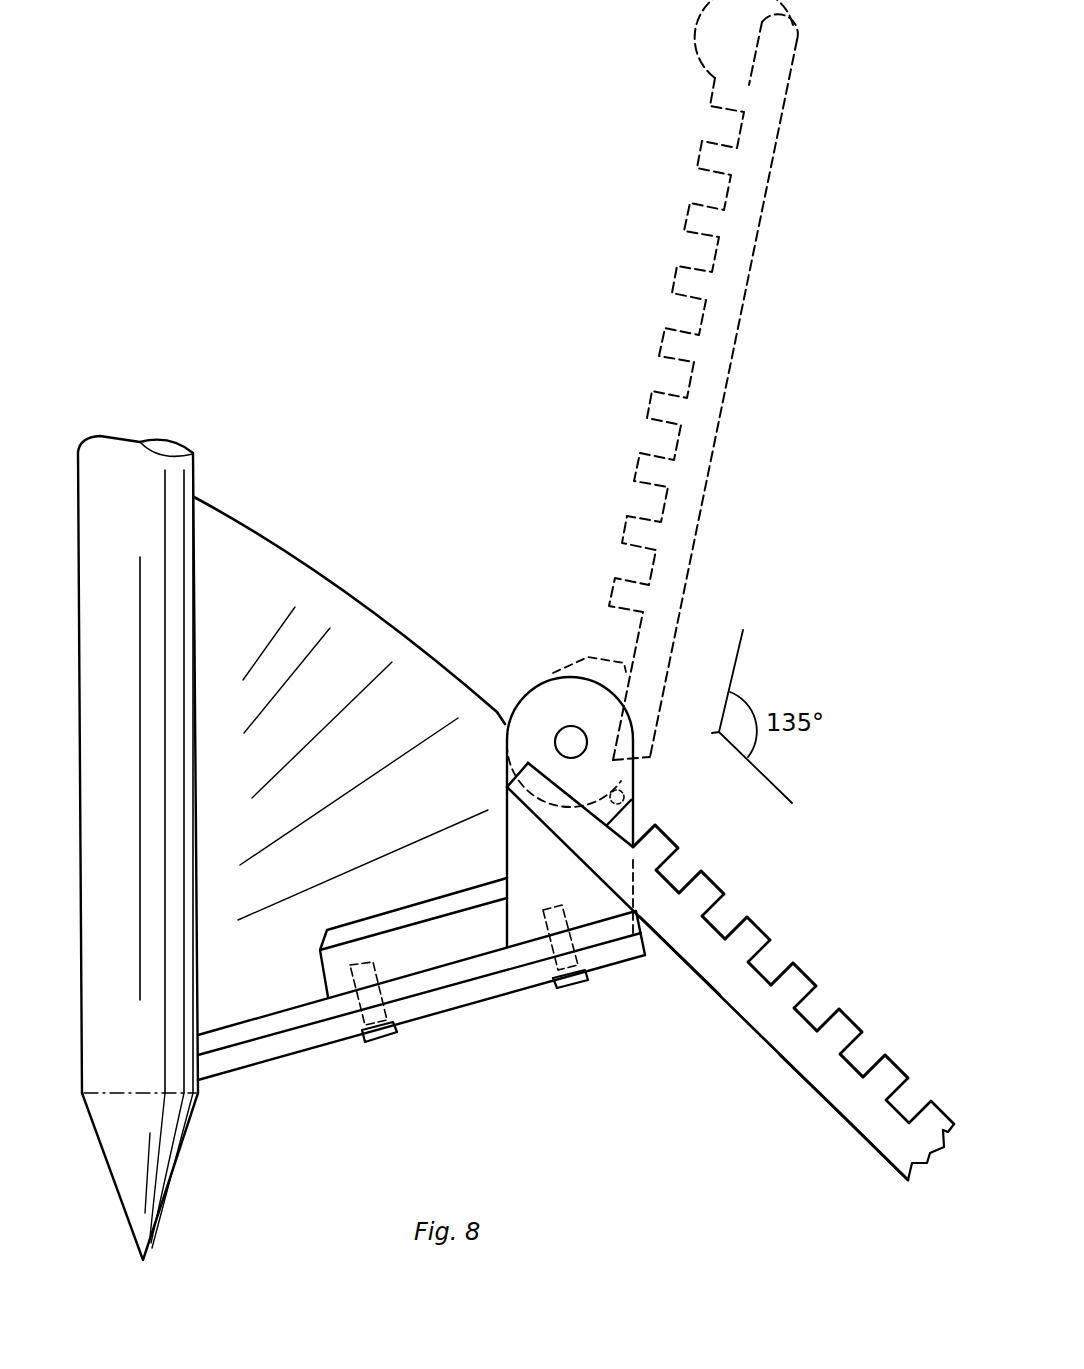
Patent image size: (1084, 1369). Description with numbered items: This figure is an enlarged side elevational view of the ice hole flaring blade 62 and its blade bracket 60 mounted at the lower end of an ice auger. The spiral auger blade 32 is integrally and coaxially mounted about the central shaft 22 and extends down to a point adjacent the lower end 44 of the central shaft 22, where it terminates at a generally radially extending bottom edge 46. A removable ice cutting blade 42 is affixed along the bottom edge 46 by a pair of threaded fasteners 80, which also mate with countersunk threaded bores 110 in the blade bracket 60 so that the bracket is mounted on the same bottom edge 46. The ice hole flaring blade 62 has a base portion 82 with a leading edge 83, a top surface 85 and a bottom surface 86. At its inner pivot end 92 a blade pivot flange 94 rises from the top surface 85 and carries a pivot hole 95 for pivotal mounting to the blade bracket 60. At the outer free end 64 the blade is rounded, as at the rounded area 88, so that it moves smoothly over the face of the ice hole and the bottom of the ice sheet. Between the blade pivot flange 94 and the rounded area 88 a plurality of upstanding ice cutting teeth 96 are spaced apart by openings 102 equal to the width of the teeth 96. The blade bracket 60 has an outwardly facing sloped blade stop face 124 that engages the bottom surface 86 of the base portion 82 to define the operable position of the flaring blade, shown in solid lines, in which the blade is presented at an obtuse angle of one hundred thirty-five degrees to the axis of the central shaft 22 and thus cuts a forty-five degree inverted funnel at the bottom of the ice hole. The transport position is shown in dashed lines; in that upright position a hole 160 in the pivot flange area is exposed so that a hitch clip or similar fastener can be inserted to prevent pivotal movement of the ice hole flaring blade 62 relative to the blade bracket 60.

The central shaft 22 is at (132, 468).
The spiral auger blade 32 is at (267, 603).
The ice cutting blade 42 is at (242, 1033).
The lower end 44 is at (135, 1057).
The bottom edge 46 is at (325, 1035).
The blade bracket 60 is at (318, 970).
The ice hole flaring blade 62 is at (735, 1018).
The outer free end 64 is at (800, 21).
The threaded fasteners 80 is at (387, 1035).
The base portion 82 is at (862, 1137).
The leading edge 83 is at (817, 1070).
The top surface 85 is at (857, 1058).
The bottom surface 86 is at (680, 958).
The rounded area 88 is at (697, 42).
The inner pivot end 92 is at (507, 752).
The blade pivot flange 94 is at (520, 710).
The pivot hole 95 is at (560, 725).
The ice cutting teeth 96 is at (702, 877).
The opening 102 is at (723, 908).
The countersunk threaded bores 110 is at (375, 962).
The sloped blade stop face 124 is at (595, 860).
The hole 160 is at (633, 786).